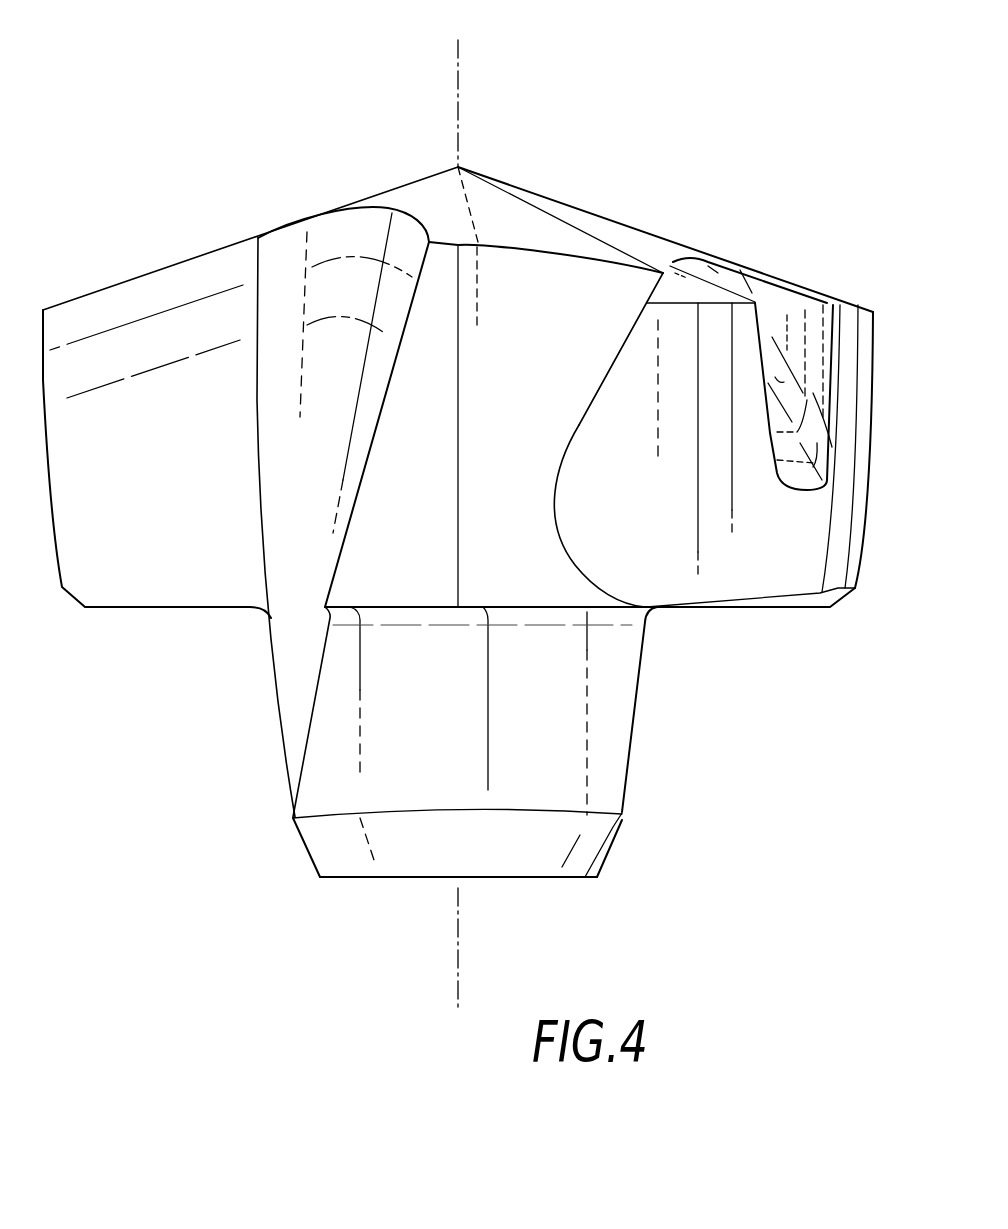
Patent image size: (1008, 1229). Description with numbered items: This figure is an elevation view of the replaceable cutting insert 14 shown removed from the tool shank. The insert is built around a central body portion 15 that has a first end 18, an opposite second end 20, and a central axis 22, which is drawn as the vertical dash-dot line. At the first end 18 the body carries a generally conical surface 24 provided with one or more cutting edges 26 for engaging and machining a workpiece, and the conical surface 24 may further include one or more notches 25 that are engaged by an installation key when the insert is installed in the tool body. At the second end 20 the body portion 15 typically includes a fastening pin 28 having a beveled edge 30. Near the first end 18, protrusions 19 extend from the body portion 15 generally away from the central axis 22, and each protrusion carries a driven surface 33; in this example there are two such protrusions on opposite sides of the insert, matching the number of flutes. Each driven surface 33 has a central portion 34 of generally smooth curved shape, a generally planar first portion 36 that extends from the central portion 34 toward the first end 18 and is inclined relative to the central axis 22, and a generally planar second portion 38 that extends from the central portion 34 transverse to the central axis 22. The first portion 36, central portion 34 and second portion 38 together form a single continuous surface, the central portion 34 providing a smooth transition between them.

The cutting insert 14 is at (134, 175).
The central body portion 15 is at (380, 488).
The first end 18 is at (469, 140).
The protrusion 19 is at (620, 468).
The second end 20 is at (433, 912).
The central axis 22 is at (461, 53).
The conical surface 24 is at (518, 200).
The notch 25 is at (807, 299).
The cutting edge 26 is at (213, 252).
The fastening pin 28 is at (665, 747).
The beveled edge 30 is at (568, 840).
The driven surface 33 is at (499, 560).
The central portion 34 is at (530, 529).
The first portion 36 is at (581, 364).
The second portion 38 is at (713, 628).